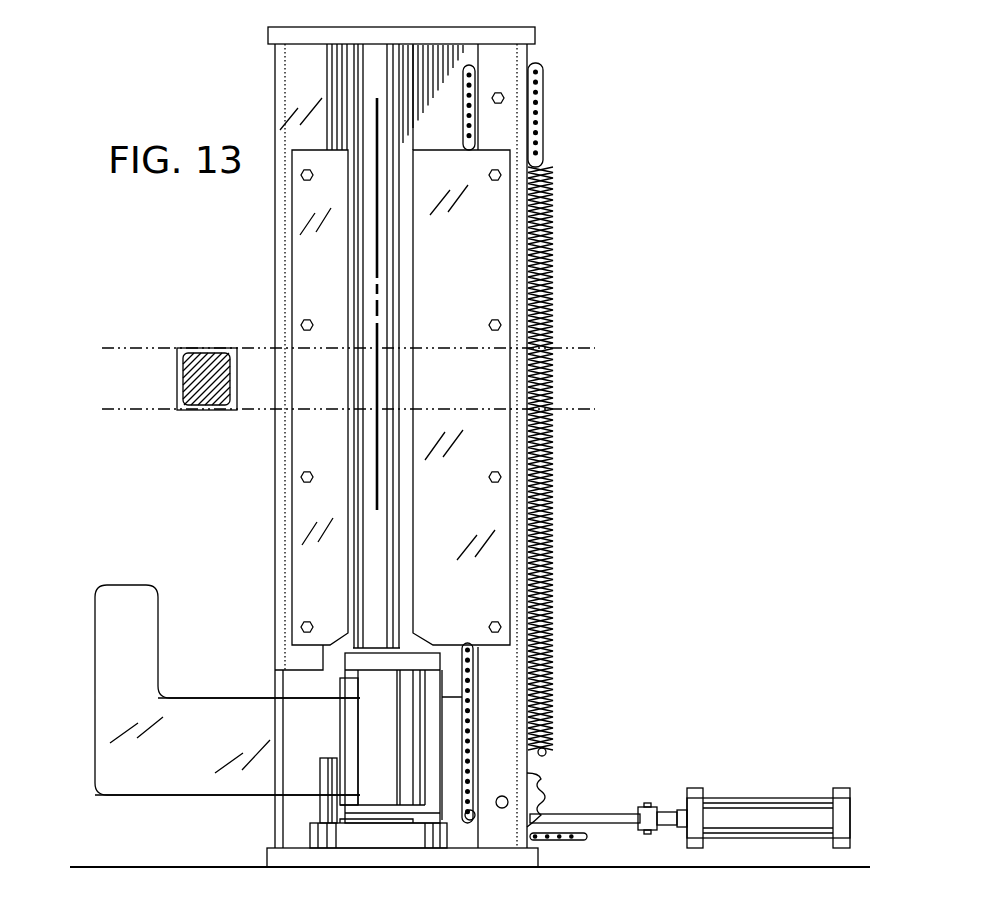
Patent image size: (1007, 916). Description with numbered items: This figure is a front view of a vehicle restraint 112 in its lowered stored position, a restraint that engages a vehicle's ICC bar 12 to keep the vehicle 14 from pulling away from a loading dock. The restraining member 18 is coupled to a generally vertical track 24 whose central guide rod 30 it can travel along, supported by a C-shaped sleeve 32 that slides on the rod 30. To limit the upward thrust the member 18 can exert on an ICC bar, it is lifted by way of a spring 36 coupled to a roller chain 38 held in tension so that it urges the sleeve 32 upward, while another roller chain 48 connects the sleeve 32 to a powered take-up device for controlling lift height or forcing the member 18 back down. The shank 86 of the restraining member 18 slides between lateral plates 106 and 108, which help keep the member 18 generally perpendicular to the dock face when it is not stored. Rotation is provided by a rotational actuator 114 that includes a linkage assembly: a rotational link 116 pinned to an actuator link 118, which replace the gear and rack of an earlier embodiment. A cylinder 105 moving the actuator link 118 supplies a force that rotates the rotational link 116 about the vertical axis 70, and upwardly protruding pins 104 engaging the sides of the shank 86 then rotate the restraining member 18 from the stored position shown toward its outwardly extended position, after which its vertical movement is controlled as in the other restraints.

The ICC bar 12 is at (223, 348).
The vehicle 14 is at (565, 88).
The restraining member 18 is at (160, 642).
The track 24 is at (275, 515).
The guide rod 30 is at (400, 538).
The sleeve 32 is at (430, 763).
The spring 36 is at (553, 527).
The roller chain 38 is at (543, 155).
The roller chain 48 is at (473, 745).
The vertical axis 70 is at (376, 380).
The shank 86 is at (238, 698).
The pins 104 is at (318, 770).
The cylinder 105 is at (792, 798).
The lateral plate 106 is at (337, 300).
The lateral plate 108 is at (477, 300).
The vehicle restraint 112 is at (617, 390).
The rotational actuator 114 is at (258, 817).
The rotational link 116 is at (380, 835).
The actuator link 118 is at (573, 815).